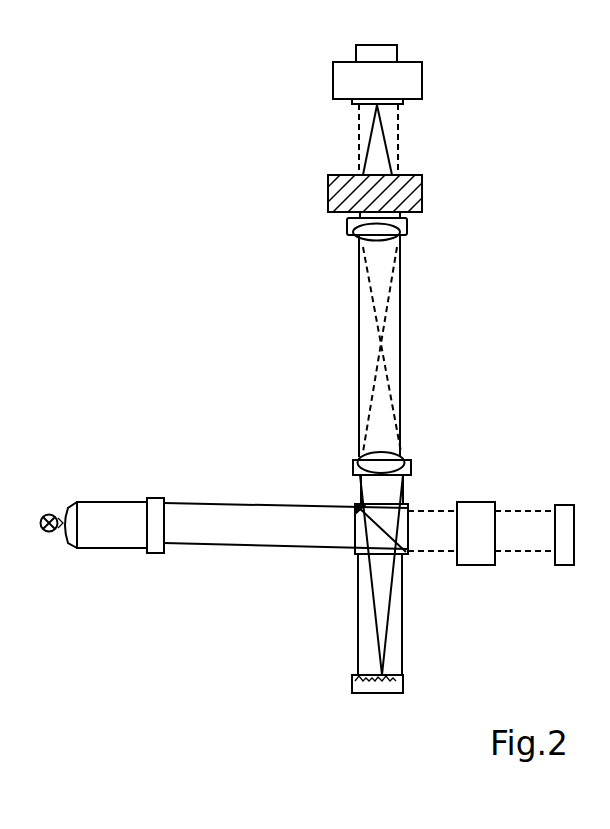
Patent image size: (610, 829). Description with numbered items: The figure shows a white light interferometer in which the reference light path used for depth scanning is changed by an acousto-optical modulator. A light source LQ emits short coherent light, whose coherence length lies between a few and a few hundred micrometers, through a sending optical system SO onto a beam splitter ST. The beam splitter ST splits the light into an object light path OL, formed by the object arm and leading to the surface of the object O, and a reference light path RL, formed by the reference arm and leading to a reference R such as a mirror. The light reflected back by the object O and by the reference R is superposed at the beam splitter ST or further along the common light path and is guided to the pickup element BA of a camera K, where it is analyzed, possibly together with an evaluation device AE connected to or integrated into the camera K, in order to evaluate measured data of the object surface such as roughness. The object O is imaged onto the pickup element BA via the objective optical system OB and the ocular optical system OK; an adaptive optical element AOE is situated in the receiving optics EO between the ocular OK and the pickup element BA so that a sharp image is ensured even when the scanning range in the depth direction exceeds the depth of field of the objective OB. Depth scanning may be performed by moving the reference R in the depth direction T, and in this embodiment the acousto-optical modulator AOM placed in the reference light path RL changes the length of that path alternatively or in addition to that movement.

The evaluation device AE is at (397, 55).
The camera K is at (422, 80).
The pickup element BA is at (403, 104).
The adaptive optical element AOE is at (422, 193).
The ocular optical system OK is at (407, 230).
The receiving optics EO is at (317, 270).
The objective optical system OB is at (411, 462).
The beam splitter ST is at (357, 522).
The object light path OL is at (355, 612).
The object O is at (403, 685).
The acousto-optical modulator AOM is at (468, 502).
The depth direction T is at (477, 568).
The reference R is at (565, 505).
The reference light path RL is at (520, 555).
The sending optical system SO is at (155, 560).
The light source LQ is at (49, 513).